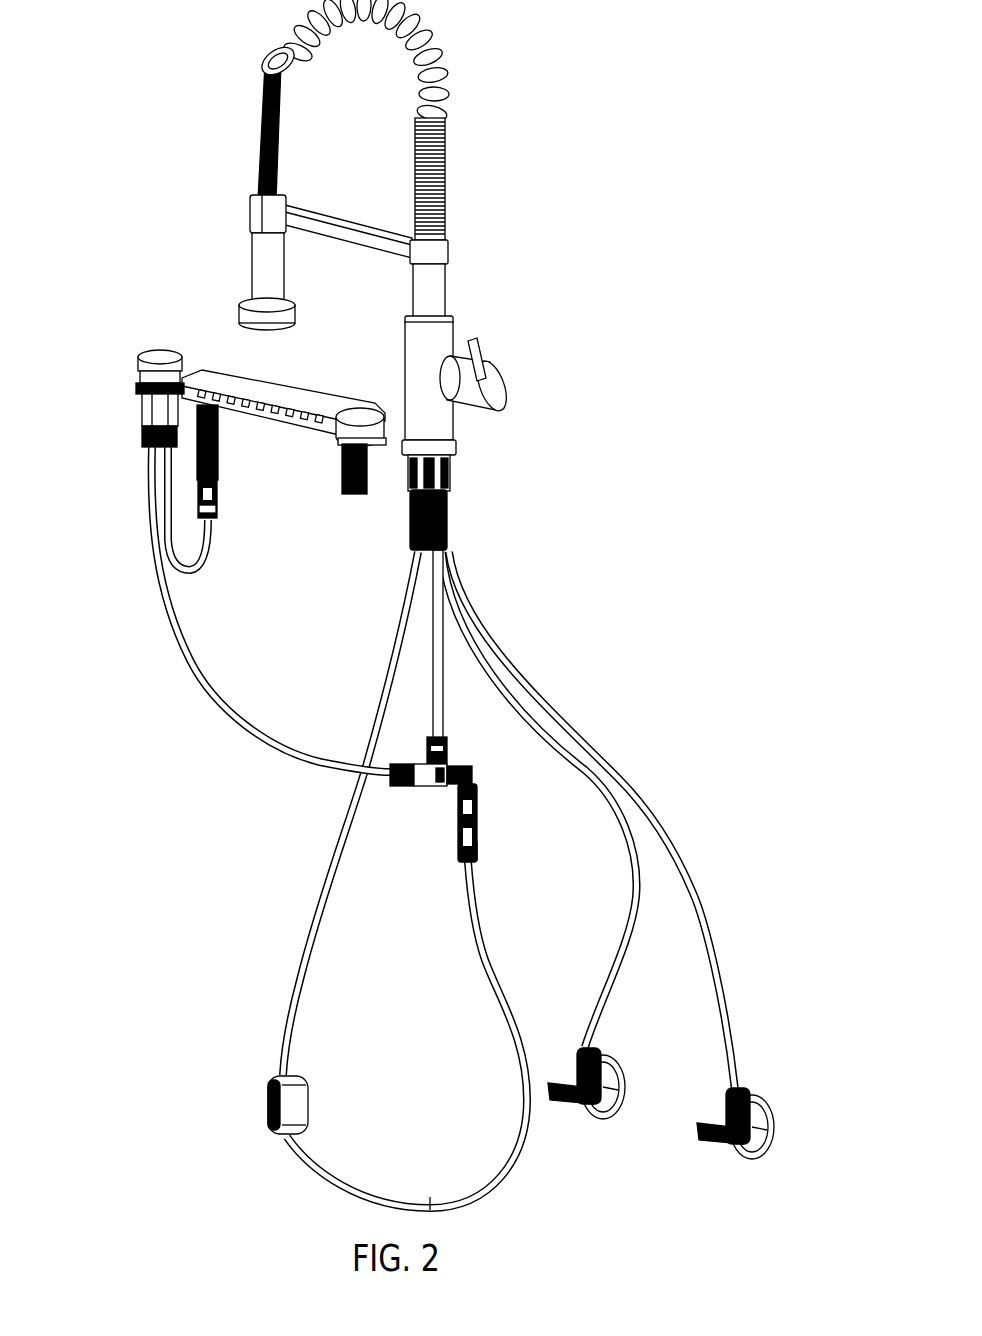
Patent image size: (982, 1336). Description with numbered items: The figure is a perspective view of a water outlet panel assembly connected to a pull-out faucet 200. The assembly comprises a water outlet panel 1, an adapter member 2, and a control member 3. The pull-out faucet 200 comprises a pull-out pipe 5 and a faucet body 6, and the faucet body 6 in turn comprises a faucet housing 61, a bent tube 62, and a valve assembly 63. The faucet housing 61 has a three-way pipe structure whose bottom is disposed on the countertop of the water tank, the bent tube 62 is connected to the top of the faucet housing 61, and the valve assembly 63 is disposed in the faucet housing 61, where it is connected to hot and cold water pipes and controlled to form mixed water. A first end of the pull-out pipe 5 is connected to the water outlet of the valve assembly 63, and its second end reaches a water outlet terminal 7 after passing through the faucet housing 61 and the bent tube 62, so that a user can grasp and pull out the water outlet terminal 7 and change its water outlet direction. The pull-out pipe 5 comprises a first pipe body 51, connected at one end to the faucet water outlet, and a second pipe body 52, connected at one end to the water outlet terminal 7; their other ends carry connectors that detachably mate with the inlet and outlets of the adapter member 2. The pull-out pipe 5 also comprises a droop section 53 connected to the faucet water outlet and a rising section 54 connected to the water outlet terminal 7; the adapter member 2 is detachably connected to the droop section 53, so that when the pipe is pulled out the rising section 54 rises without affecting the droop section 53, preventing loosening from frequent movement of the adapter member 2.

The pull-out faucet 200 is at (403, 275).
The water outlet panel 1 is at (247, 383).
The adapter member 2 is at (390, 772).
The control member 3 is at (137, 397).
The pull-out pipe 5 is at (325, 883).
The faucet body 6 is at (432, 420).
The water outlet terminal 7 is at (265, 258).
The first pipe body 51 is at (437, 678).
The second pipe body 52 is at (493, 987).
The droop section 53 is at (470, 900).
The rising section 54 is at (292, 952).
The faucet housing 61 is at (523, 390).
The bent tube 62 is at (445, 165).
The valve assembly 63 is at (497, 392).